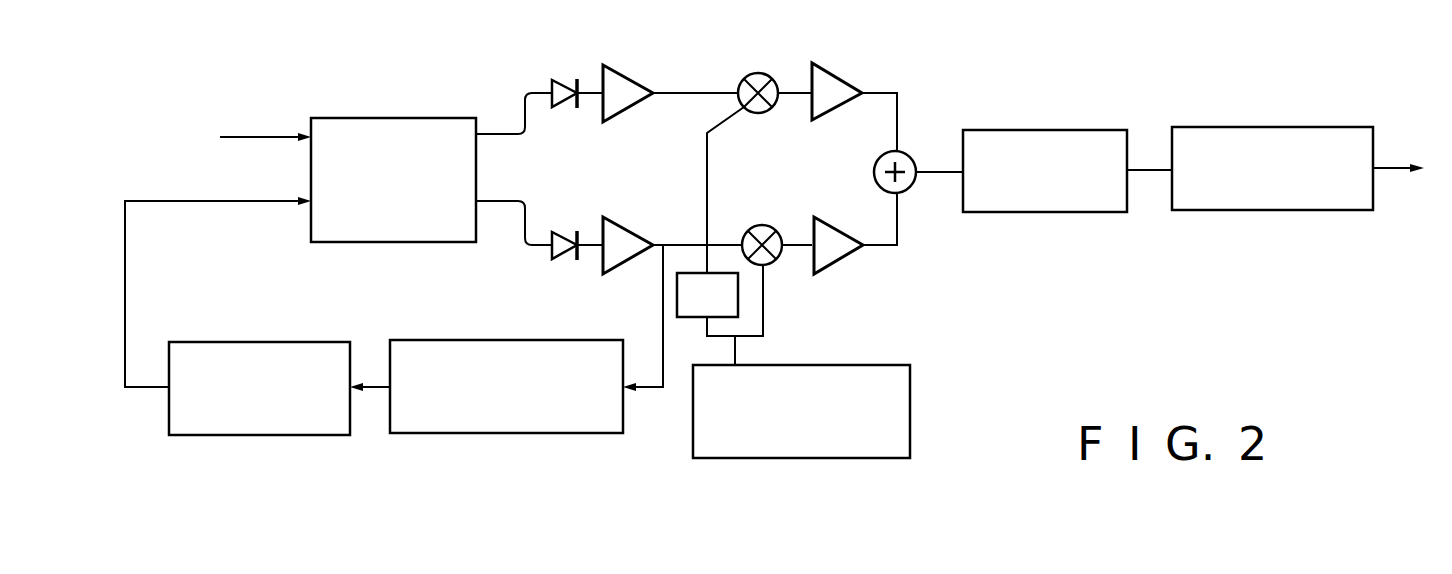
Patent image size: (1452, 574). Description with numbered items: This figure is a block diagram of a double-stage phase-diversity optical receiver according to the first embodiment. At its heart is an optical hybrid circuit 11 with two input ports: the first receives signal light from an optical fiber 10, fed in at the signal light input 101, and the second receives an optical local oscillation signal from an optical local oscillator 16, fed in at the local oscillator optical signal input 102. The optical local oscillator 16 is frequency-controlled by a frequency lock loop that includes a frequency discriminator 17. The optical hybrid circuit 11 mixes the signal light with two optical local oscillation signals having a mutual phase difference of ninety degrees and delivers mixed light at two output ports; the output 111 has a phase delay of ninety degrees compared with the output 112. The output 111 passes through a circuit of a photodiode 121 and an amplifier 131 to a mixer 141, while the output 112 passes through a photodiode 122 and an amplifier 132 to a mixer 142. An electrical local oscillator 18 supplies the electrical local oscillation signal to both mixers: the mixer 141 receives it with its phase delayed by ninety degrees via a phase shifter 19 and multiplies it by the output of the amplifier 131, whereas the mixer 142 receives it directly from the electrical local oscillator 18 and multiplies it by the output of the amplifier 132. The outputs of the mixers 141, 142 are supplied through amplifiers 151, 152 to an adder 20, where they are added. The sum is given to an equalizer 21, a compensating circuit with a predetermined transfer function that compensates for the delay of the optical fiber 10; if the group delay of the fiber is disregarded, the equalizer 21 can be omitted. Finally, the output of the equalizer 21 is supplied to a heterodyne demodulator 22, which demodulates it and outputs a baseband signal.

The optical fiber 10 is at (265, 114).
The signal light input 101 is at (248, 110).
The local oscillator optical signal input 102 is at (218, 280).
The optical hybrid circuit 11 is at (416, 118).
The output 111 is at (514, 113).
The output 112 is at (514, 211).
The photodiode 121 is at (560, 82).
The photodiode 122 is at (562, 233).
The amplifier 131 is at (637, 80).
The amplifier 132 is at (637, 230).
The mixer 141 is at (754, 73).
The mixer 142 is at (762, 225).
The amplifier 151 is at (848, 86).
The amplifier 152 is at (836, 262).
The optical local oscillator 16 is at (311, 342).
The frequency discriminator 17 is at (444, 340).
The electrical local oscillator 18 is at (911, 378).
The phase shifter 19 is at (685, 319).
The adder 20 is at (907, 190).
The equalizer 21 is at (1073, 130).
The heterodyne demodulator 22 is at (1318, 127).